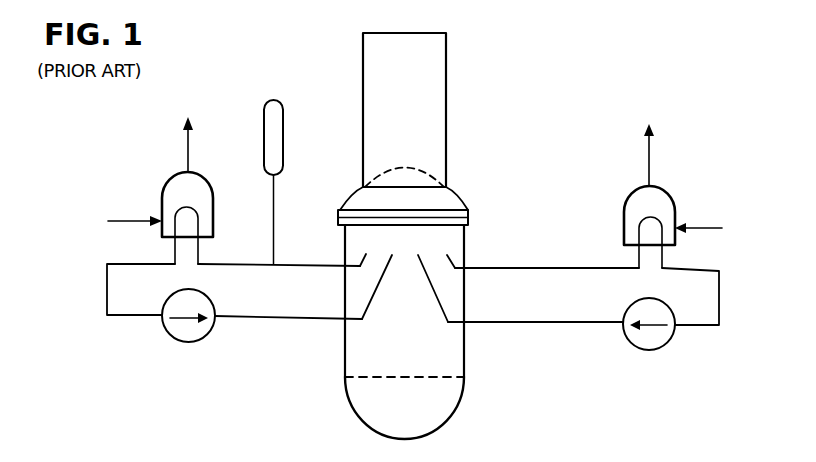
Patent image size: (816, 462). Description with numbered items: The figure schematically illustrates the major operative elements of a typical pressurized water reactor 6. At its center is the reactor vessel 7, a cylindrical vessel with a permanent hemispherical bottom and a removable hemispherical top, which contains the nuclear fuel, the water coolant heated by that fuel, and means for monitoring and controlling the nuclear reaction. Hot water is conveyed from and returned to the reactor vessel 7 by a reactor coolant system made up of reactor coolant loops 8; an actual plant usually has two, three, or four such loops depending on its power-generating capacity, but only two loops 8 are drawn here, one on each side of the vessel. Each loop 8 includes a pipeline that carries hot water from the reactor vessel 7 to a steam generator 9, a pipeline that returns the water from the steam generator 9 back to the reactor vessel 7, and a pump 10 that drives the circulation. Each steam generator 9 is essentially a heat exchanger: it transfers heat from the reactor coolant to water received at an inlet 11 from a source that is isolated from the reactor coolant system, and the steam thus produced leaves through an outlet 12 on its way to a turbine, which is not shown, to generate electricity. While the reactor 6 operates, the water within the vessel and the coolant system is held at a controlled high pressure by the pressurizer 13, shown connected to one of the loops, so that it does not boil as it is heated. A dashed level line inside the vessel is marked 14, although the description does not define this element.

The pressurized water reactor 6 is at (302, 369).
The reactor vessel 7 is at (465, 348).
The reactor coolant loop 8 is at (100, 284).
The steam generator 9 is at (214, 207).
The pump 10 is at (177, 330).
The inlet 11 is at (129, 221).
The outlet 12 is at (187, 150).
The pressurizer 13 is at (282, 126).
The liquid level 14 is at (383, 377).